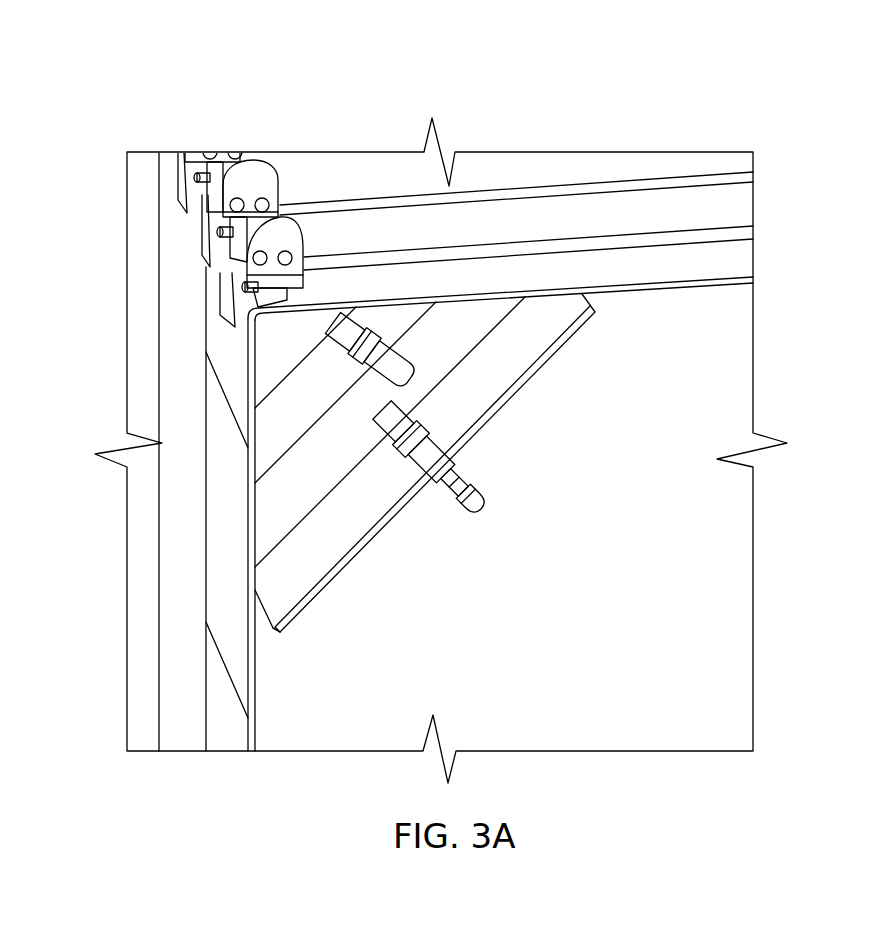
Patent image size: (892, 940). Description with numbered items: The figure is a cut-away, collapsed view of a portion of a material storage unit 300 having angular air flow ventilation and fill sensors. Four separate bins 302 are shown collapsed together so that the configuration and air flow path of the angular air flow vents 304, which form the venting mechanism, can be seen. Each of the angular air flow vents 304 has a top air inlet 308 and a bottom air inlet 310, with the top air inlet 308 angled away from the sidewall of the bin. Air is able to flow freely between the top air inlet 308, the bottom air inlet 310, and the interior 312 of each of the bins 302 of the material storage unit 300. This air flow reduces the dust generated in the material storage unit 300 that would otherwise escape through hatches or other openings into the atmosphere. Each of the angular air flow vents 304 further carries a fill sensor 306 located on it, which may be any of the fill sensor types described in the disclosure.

The material storage unit 300 is at (650, 78).
The bins 302 is at (393, 287).
The angular air flow vents 304 is at (402, 318).
The fill sensor 306 is at (392, 373).
The top air inlet 308 is at (597, 304).
The bottom air inlet 310 is at (273, 628).
The interior 312 is at (618, 609).